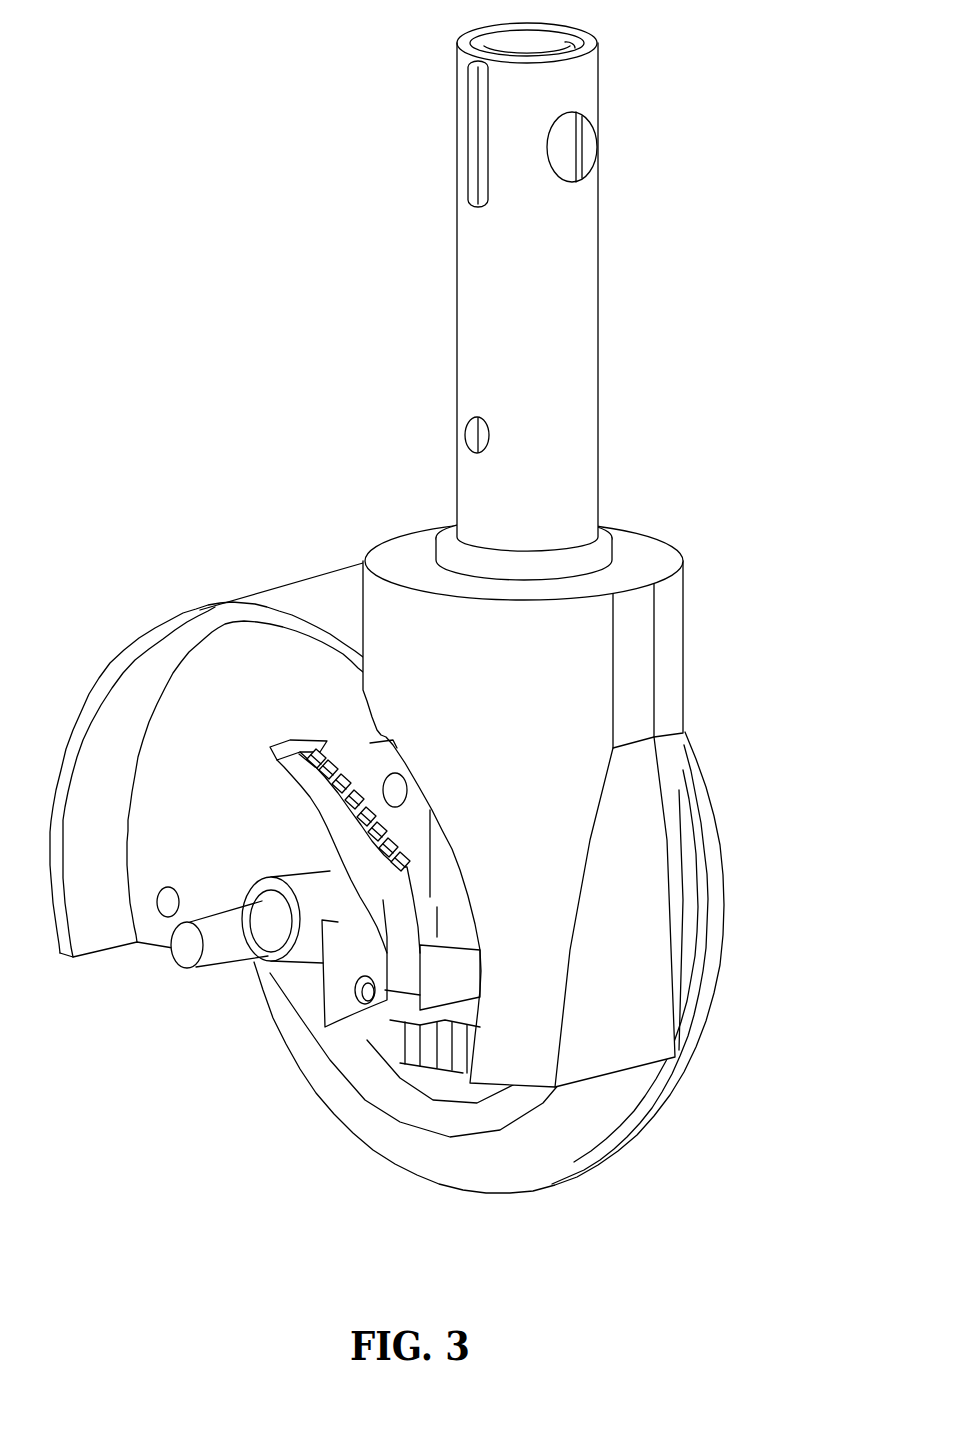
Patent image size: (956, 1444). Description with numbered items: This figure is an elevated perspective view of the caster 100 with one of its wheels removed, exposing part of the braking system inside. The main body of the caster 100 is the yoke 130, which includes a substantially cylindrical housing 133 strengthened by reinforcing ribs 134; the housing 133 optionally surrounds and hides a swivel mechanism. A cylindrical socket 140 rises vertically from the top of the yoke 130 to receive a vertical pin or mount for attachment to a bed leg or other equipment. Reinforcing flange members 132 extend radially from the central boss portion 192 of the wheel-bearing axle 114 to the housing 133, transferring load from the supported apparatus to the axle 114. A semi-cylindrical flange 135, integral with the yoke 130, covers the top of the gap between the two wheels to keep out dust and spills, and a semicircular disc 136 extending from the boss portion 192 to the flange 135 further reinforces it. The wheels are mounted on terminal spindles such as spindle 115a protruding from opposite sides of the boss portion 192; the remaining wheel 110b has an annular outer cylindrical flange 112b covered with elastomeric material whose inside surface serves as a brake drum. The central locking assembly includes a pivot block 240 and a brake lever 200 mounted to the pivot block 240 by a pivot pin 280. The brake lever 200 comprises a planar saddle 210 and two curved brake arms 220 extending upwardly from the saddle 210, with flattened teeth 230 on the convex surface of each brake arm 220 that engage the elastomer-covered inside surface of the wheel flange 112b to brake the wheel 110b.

The caster 100 is at (216, 298).
The cylindrical socket 140 is at (598, 287).
The cylindrical housing 133 is at (683, 572).
The yoke 130 is at (535, 726).
The flange 135 is at (110, 665).
The semicircular disc 136 is at (205, 826).
The flattened teeth 230 is at (312, 742).
The brake arms 220 is at (293, 765).
The flange members 132 is at (315, 827).
The central boss portion 192 is at (307, 877).
The axle 114 is at (250, 948).
The terminal spindle 115a is at (188, 946).
The brake lever 200 is at (385, 969).
The pivot block 240 is at (452, 977).
The pivot pin 280 is at (363, 993).
The saddle 210 is at (448, 1058).
The reinforcing ribs 134 is at (648, 1022).
The wheel 110b is at (570, 1168).
The annular outer cylindrical flange 112b is at (593, 1147).